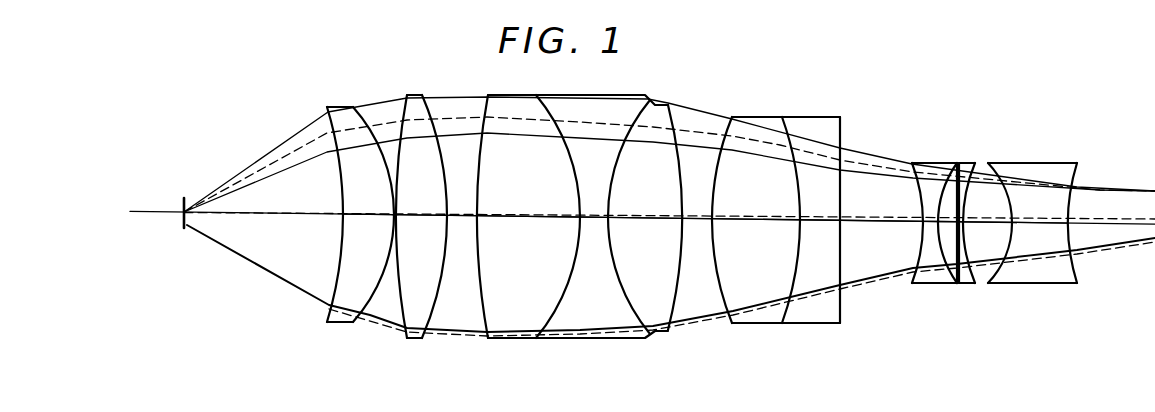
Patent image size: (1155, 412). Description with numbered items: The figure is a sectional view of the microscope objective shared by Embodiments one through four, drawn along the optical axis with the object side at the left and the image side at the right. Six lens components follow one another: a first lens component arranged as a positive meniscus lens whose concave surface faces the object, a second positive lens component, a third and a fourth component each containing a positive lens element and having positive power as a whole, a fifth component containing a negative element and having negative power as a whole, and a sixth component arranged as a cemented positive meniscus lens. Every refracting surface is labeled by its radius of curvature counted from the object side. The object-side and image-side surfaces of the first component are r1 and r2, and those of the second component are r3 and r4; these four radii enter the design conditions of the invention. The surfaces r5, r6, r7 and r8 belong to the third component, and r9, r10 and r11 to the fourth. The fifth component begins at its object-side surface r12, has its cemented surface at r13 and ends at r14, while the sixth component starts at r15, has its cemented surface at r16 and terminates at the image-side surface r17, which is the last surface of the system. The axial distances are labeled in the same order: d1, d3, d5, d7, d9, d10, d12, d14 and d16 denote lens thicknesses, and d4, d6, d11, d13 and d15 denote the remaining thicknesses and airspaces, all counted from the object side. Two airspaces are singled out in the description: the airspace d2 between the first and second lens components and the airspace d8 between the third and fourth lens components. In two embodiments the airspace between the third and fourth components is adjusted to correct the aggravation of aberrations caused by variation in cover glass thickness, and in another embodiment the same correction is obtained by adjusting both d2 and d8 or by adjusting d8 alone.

The radius of curvature of object-side surface of first lens component r1 is at (333, 282).
The radius of curvature of image-side surface of first lens component r2 is at (372, 308).
The radius of curvature of object-side surface of second lens component r3 is at (400, 316).
The radius of curvature of image-side surface of second lens component r4 is at (433, 308).
The radius of curvature of lens surface r5 is at (483, 312).
The radius of curvature of lens surface r6 is at (560, 312).
The radius of curvature of lens surface r7 is at (633, 312).
The radius of curvature of lens surface r8 is at (676, 302).
The radius of curvature of lens surface r9 is at (720, 302).
The radius of curvature of lens surface r10 is at (789, 308).
The radius of curvature of lens surface r11 is at (842, 306).
The radius of curvature of object-side surface of fifth lens component r12 is at (909, 262).
The radius of curvature of cemented surface of fifth lens component r13 is at (936, 268).
The radius of curvature of lens surface r14 is at (958, 270).
The radius of curvature of lens surface r15 is at (982, 276).
The radius of curvature of cemented surface of sixth lens component r16 is at (1008, 272).
The radius of curvature of image-side surface of sixth lens component r17 is at (1077, 262).
The lens thickness d1 is at (365, 215).
The airspace between first and second lens components d2 is at (396, 216).
The lens thickness d3 is at (412, 220).
The lens thickness or airspace d4 is at (460, 216).
The lens thickness or airspace d5 is at (518, 216).
The lens thickness or airspace d6 is at (592, 216).
The lens thickness or airspace d7 is at (642, 216).
The airspace between third and fourth lens components d8 is at (697, 217).
The lens thickness or airspace d9 is at (748, 218).
The lens thickness or airspace d10 is at (812, 221).
The lens thickness or airspace d11 is at (863, 221).
The lens thickness or airspace d12 is at (925, 221).
The lens thickness or airspace d13 is at (948, 221).
The lens thickness or airspace d14 is at (961, 226).
The lens thickness or airspace d15 is at (988, 221).
The lens thickness or airspace d16 is at (1040, 223).